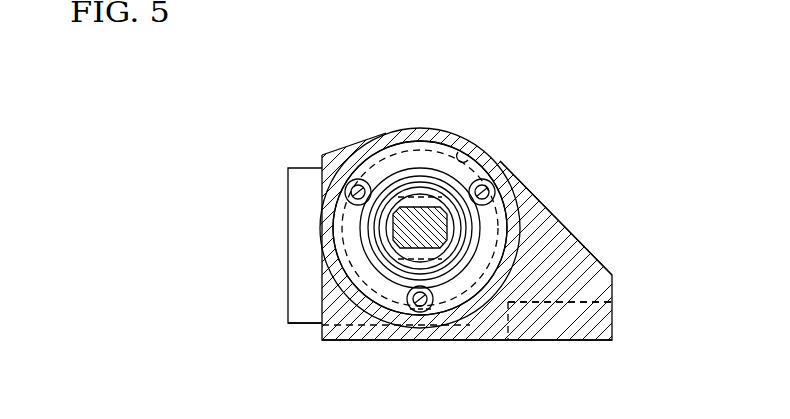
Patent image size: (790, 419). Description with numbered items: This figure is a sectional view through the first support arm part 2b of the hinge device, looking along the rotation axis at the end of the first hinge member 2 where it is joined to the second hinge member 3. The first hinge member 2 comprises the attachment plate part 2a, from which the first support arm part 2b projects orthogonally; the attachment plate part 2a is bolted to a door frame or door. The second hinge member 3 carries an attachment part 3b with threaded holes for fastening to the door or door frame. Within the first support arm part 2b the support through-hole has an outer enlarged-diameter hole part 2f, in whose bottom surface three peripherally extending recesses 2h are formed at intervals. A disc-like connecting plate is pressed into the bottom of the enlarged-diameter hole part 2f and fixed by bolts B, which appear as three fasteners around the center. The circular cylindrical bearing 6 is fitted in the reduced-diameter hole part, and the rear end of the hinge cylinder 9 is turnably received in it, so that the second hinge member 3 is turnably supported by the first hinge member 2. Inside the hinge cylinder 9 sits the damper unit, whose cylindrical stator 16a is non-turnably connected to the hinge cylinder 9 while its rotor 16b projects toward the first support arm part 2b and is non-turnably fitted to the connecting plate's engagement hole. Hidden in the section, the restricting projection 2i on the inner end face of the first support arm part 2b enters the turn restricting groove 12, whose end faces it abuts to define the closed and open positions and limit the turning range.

The first hinge member 2 is at (594, 259).
The attachment plate part 2a is at (537, 340).
The first support arm part 2b is at (562, 228).
The enlarged-diameter hole part 2f is at (468, 150).
The recesses 2h is at (432, 150).
The restricting projection 2i is at (418, 332).
The second hinge member 3 is at (288, 250).
The attachment part 3b is at (288, 282).
The bearing 6 is at (408, 157).
The hinge cylinder 9 is at (367, 147).
The turn restricting groove 12 is at (494, 332).
The stator 16a is at (382, 255).
The rotor 16b is at (402, 243).
The bolts B is at (346, 190).